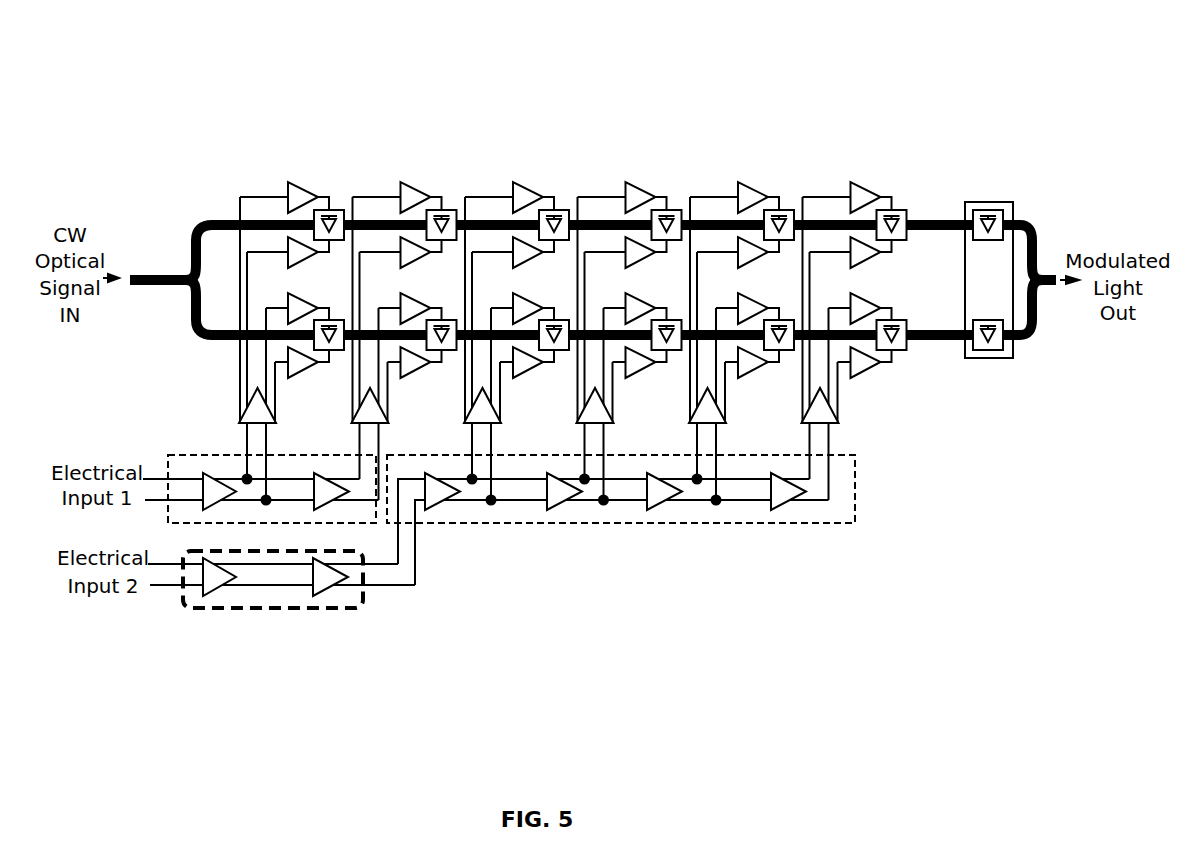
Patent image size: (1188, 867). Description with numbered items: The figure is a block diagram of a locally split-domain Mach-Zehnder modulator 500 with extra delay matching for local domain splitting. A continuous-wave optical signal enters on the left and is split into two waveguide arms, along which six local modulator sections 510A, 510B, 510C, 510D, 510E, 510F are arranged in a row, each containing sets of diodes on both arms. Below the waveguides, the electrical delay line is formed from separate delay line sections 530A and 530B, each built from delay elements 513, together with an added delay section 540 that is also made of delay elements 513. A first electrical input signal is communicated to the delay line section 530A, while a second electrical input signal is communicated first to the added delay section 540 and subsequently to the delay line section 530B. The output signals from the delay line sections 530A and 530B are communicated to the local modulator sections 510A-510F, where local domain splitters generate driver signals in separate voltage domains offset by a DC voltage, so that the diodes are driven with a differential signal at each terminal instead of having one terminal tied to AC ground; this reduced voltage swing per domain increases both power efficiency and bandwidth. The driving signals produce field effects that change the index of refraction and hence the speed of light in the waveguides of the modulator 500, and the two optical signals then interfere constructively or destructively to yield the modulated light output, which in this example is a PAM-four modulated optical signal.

The locally split-domain MZM 500 is at (205, 97).
The local modulator section 510A is at (303, 125).
The local modulator section 510B is at (427, 160).
The local modulator section 510C is at (522, 127).
The local modulator section 510D is at (637, 158).
The local modulator section 510E is at (738, 127).
The local modulator section 510F is at (837, 162).
The delay element 513 is at (437, 500).
The delay line section 530A is at (190, 455).
The delay line section 530B is at (640, 523).
The added delay section 540 is at (307, 610).